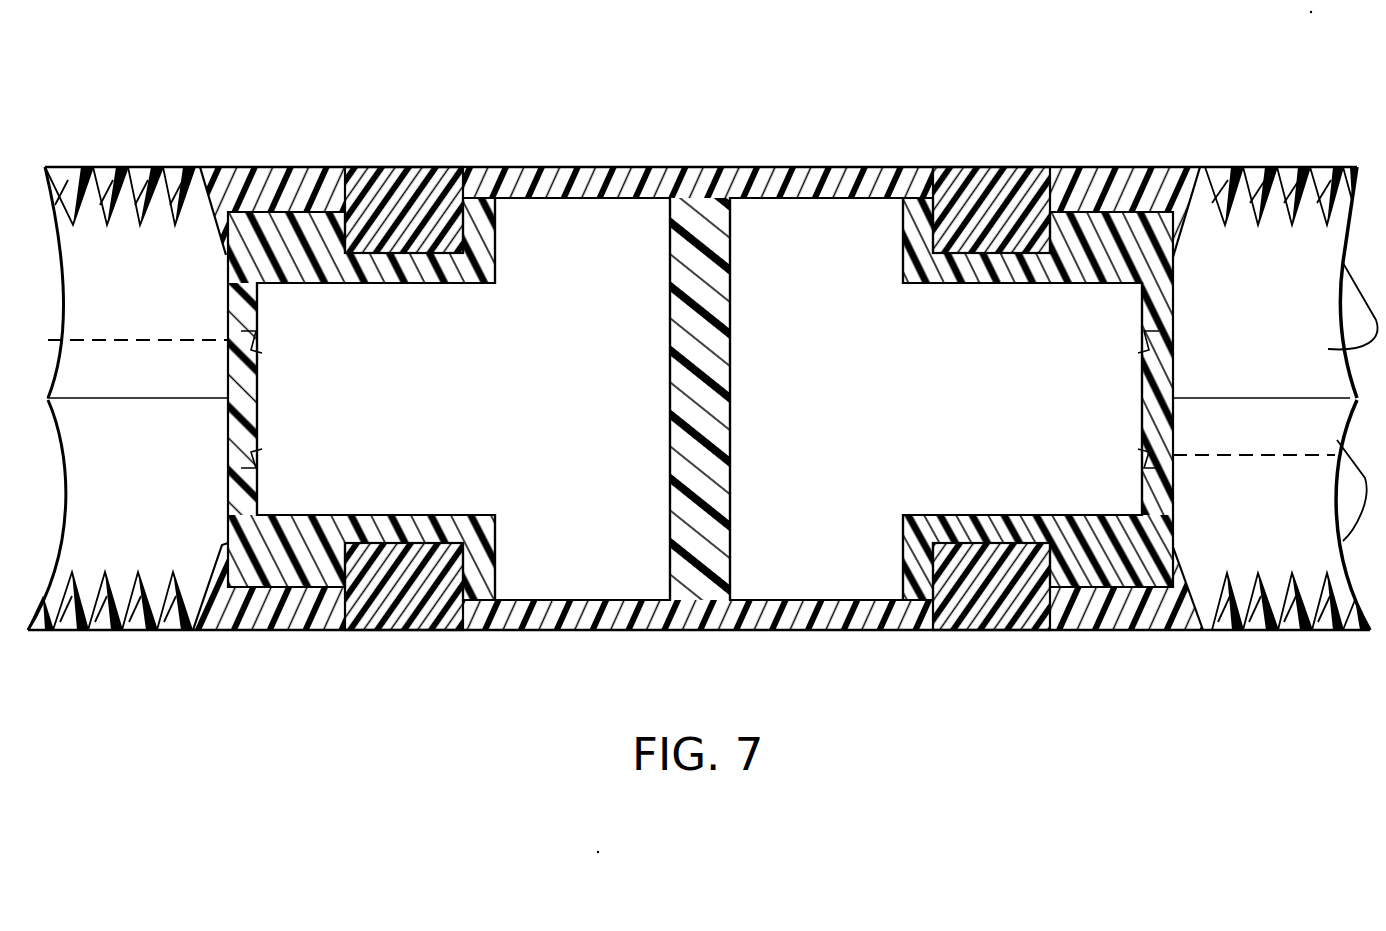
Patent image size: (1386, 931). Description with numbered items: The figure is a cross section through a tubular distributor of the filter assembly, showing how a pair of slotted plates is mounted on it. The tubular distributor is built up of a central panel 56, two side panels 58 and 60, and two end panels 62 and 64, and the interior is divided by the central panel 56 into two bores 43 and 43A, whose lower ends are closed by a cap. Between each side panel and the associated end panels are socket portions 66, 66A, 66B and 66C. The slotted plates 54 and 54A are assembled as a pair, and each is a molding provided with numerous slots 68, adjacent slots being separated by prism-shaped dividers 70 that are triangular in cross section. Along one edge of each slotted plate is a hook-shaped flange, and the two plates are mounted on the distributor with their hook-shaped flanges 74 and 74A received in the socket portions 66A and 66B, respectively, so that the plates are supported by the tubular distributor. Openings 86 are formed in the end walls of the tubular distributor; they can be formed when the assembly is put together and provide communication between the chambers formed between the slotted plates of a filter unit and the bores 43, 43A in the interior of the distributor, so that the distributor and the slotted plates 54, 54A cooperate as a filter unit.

The bore 43 is at (668, 495).
The bore 43A is at (731, 563).
The slotted plate 54 is at (1343, 349).
The slotted plate 54A is at (1338, 444).
The central panel 56 is at (727, 400).
The side panel 58 is at (580, 172).
The side panel 60 is at (545, 622).
The end panel 62 is at (230, 453).
The end panel 64 is at (1162, 370).
The socket portion 66 is at (338, 267).
The socket portion 66A is at (993, 273).
The socket portion 66B is at (995, 528).
The socket portion 66C is at (402, 523).
The slots 68 is at (1276, 628).
The prism-shaped divider 70 is at (1228, 556).
The hook-shaped flange 74 is at (1073, 165).
The hook-shaped flange 74A is at (990, 600).
The openings 86 is at (262, 353).